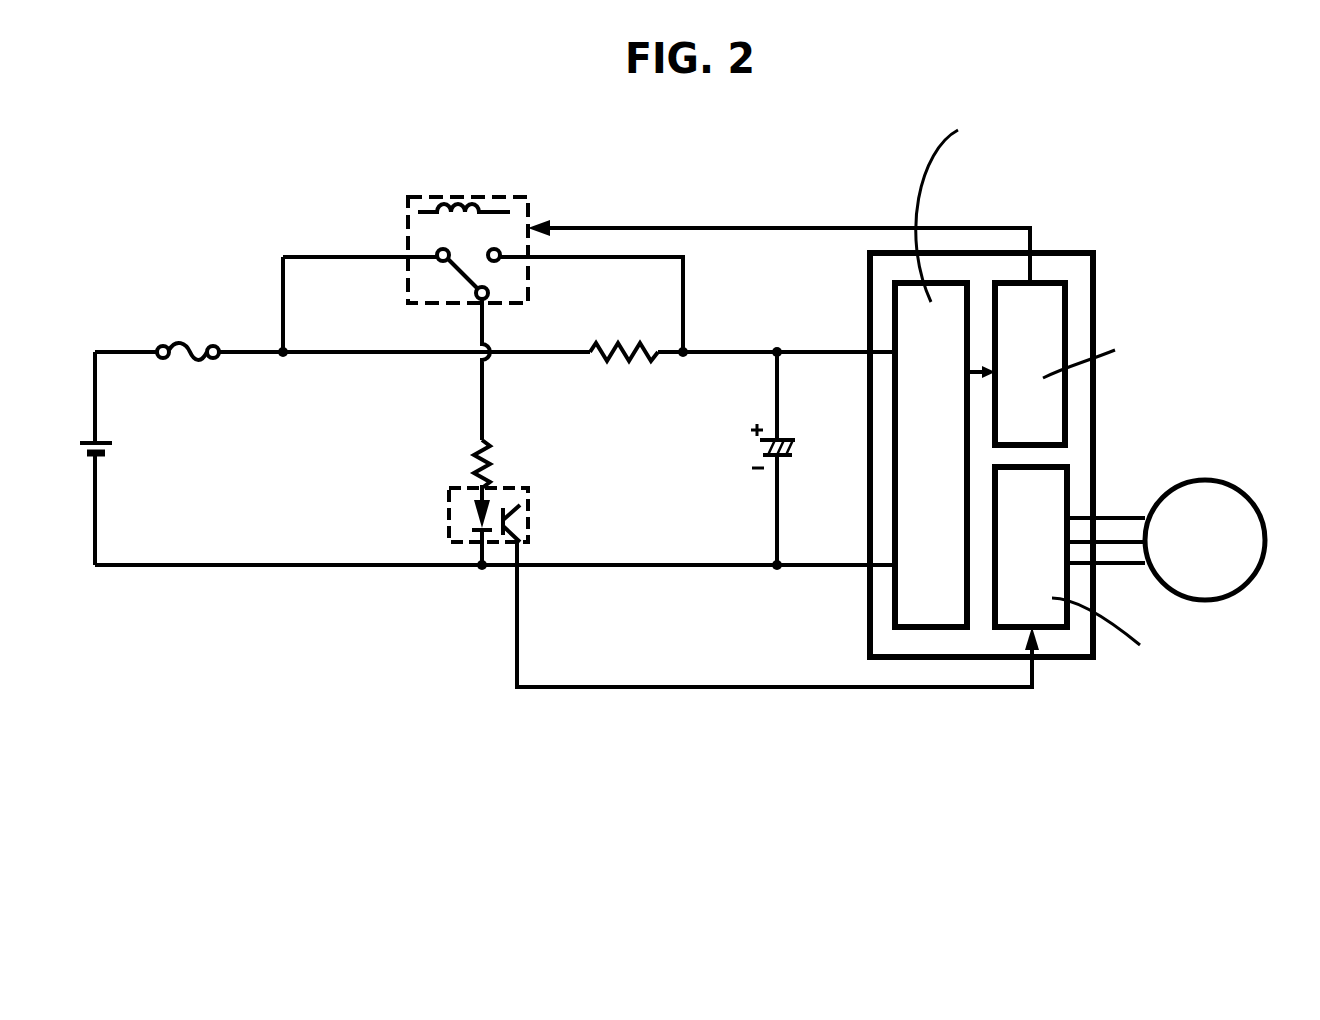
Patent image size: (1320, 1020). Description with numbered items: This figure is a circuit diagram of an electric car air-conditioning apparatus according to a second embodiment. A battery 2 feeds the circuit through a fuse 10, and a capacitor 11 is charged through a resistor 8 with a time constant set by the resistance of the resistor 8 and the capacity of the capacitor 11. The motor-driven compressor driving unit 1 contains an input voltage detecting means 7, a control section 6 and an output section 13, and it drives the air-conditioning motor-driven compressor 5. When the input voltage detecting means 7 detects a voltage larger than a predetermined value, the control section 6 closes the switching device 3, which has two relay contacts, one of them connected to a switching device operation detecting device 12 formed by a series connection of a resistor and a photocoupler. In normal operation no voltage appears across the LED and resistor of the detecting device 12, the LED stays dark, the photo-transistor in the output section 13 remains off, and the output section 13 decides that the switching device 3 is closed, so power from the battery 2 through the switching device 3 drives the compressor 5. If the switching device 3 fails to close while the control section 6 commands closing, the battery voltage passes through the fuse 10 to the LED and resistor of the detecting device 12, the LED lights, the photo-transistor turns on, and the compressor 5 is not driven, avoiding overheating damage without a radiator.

The motor-driven compressor driving unit 1 is at (1044, 253).
The battery 2 is at (110, 443).
The switching device 3 is at (478, 197).
The air-conditioning motor-driven compressor 5 is at (1214, 483).
The control section 6 is at (1065, 297).
The input voltage detecting means 7 is at (895, 300).
The resistor 8 is at (628, 342).
The fuse 10 is at (187, 341).
The capacitor 11 is at (789, 440).
The switching device operation detecting device 12 is at (470, 468).
The output section 13 is at (1067, 472).